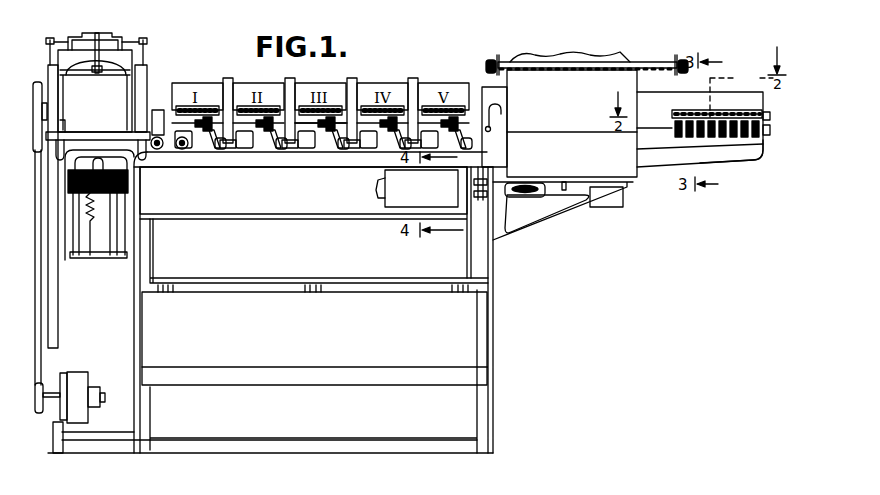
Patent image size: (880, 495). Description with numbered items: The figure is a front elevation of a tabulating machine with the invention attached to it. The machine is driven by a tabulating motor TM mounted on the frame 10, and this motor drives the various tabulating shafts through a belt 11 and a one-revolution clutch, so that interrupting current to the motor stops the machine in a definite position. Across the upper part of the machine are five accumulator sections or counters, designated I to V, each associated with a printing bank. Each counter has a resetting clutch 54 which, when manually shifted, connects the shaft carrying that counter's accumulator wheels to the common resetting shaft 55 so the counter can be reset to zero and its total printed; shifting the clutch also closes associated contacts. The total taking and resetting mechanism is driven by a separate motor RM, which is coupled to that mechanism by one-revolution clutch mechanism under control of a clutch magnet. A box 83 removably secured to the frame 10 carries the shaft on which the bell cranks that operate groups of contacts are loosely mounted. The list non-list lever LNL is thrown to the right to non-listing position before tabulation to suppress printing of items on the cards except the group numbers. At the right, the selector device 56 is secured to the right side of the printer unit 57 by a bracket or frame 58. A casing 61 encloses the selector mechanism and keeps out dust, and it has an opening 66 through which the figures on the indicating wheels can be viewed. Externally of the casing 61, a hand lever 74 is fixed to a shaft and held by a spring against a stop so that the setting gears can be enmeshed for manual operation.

The frame 10 is at (138, 273).
The belt 11 is at (40, 362).
The tabulating motor TM is at (78, 383).
The resetting clutch 54 is at (283, 148).
The common resetting shaft 55 is at (312, 127).
The box 83 is at (407, 193).
The printer unit 57 is at (583, 78).
The list non-list lever LNL is at (498, 120).
The motor RM is at (530, 197).
The casing 61 is at (732, 102).
The opening 66 is at (692, 112).
The hand lever 74 is at (770, 114).
The bracket 58 is at (728, 152).
The selector device 56 is at (757, 158).